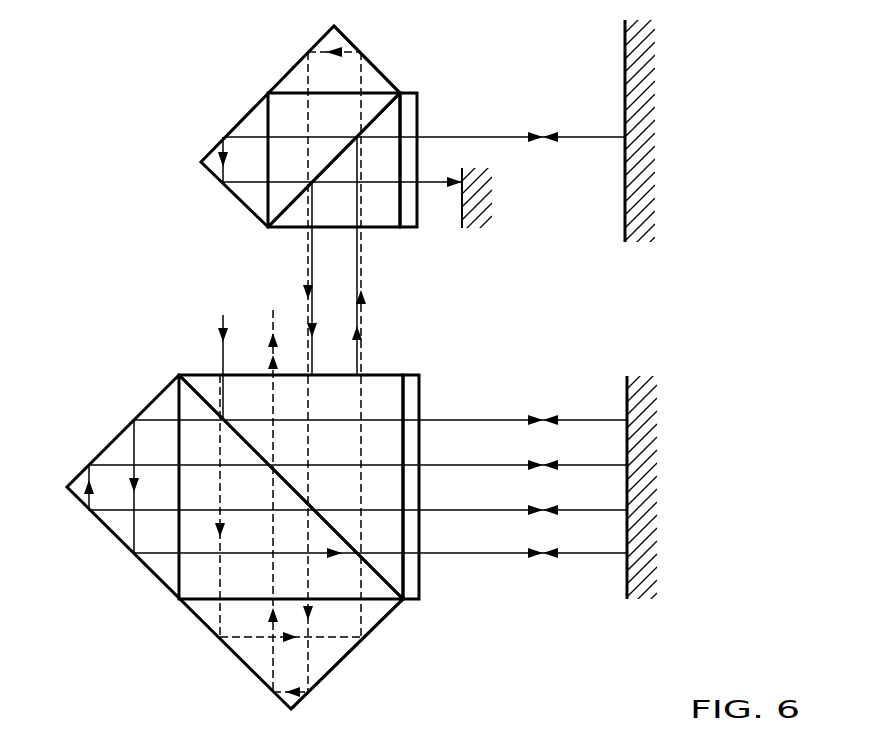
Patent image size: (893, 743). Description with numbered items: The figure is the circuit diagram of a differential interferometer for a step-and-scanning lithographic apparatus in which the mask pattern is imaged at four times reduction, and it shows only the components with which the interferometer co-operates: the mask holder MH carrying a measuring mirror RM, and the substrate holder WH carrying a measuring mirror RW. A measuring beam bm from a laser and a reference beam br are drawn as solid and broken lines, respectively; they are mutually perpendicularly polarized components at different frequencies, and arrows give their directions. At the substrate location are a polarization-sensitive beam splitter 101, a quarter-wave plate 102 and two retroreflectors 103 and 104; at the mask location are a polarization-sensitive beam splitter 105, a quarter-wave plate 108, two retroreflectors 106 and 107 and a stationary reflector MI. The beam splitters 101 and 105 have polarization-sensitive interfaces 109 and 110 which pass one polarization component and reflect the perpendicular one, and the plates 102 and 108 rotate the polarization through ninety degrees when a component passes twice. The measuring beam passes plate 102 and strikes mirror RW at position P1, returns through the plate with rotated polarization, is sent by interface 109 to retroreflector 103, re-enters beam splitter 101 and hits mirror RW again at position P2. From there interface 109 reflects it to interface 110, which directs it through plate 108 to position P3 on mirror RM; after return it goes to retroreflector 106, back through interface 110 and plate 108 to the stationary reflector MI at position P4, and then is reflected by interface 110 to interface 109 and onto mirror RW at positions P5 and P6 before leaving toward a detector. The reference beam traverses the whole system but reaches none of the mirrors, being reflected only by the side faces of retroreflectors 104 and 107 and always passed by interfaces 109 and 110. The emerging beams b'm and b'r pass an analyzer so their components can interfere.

The polarization-sensitive beam splitter 101 is at (390, 383).
The λ/4 plate 102 is at (412, 590).
The retroreflector 103 is at (153, 408).
The retroreflector 104 is at (337, 652).
The polarization-sensitive beam splitter 105 is at (283, 100).
The retroreflector 106 is at (250, 118).
The retroreflector 107 is at (377, 80).
The λ/4 plate 108 is at (412, 218).
The polarization-sensitive interface 109 is at (182, 392).
The polarization-sensitive interface 110 is at (287, 212).
The measuring mirror RM is at (625, 43).
The mask holder MH is at (640, 203).
The stationary reflector MI is at (478, 210).
The substrate holder WH is at (642, 562).
The measuring mirror RW is at (627, 588).
The position P1 is at (627, 421).
The position P2 is at (627, 554).
The position P3 is at (625, 137).
The position P4 is at (453, 187).
The position P5 is at (627, 510).
The position P6 is at (627, 465).
The measuring beam bm is at (222, 323).
The measuring beam leaving the system b'm is at (236, 312).
The reference beam br is at (219, 487).
The reference beam leaving the system b'r is at (254, 275).